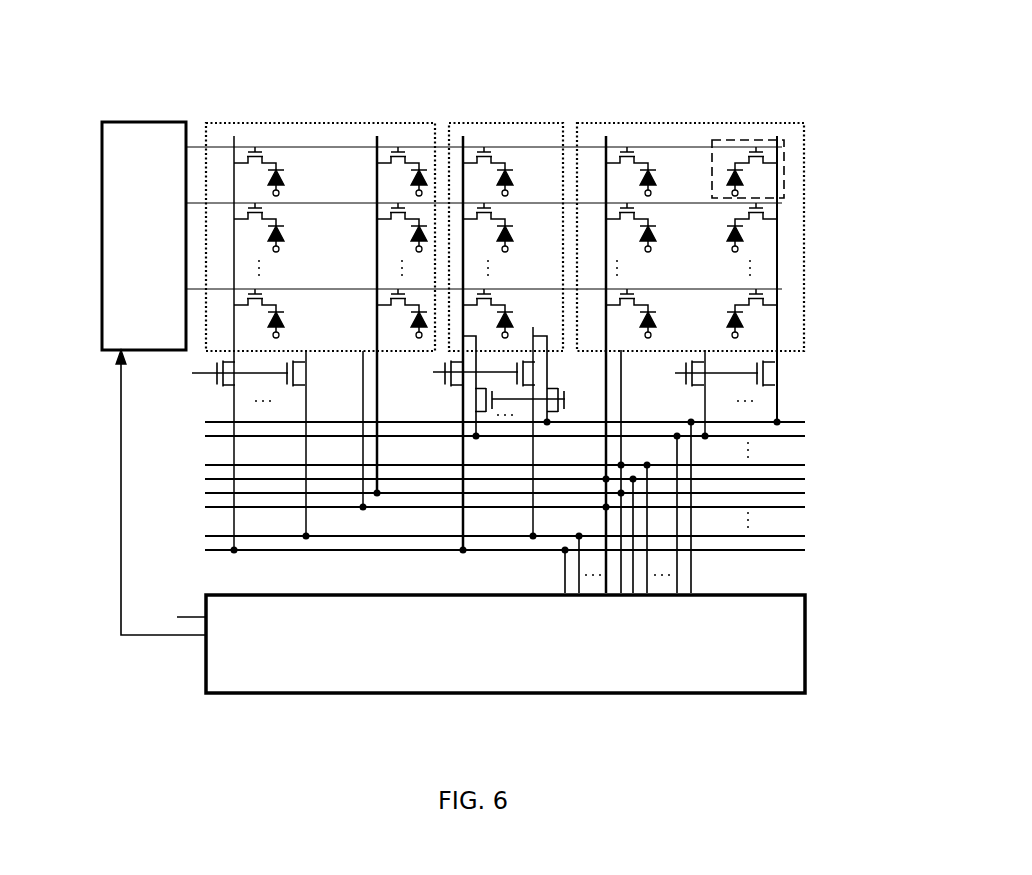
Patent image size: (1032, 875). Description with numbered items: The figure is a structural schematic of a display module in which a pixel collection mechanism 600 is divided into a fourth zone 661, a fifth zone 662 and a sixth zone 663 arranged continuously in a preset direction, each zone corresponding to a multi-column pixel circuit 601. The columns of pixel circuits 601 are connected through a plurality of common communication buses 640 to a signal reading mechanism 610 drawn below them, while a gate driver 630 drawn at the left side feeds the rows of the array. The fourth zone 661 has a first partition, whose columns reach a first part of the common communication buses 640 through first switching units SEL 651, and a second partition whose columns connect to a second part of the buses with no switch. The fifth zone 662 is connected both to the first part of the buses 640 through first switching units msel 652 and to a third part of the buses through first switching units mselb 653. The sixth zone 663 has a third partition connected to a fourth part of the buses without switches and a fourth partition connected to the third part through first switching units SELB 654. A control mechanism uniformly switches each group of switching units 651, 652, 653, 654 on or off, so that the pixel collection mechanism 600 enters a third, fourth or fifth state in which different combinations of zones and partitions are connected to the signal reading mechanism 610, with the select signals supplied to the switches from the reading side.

The pixel collection mechanism 600 is at (564, 303).
The multi-column pixel circuit 601 is at (733, 142).
The signal reading mechanism 610 is at (520, 658).
The gate driver 630 is at (113, 240).
The common communication bus 640 is at (790, 452).
The first switching unit SEL 651 is at (222, 389).
The first switching unit msel 652 is at (455, 394).
The first switching unit mselb 653 is at (572, 406).
The first switching unit SELB 654 is at (698, 392).
The fourth zone 661 is at (302, 123).
The fifth zone 662 is at (499, 123).
The sixth zone 663 is at (690, 303).